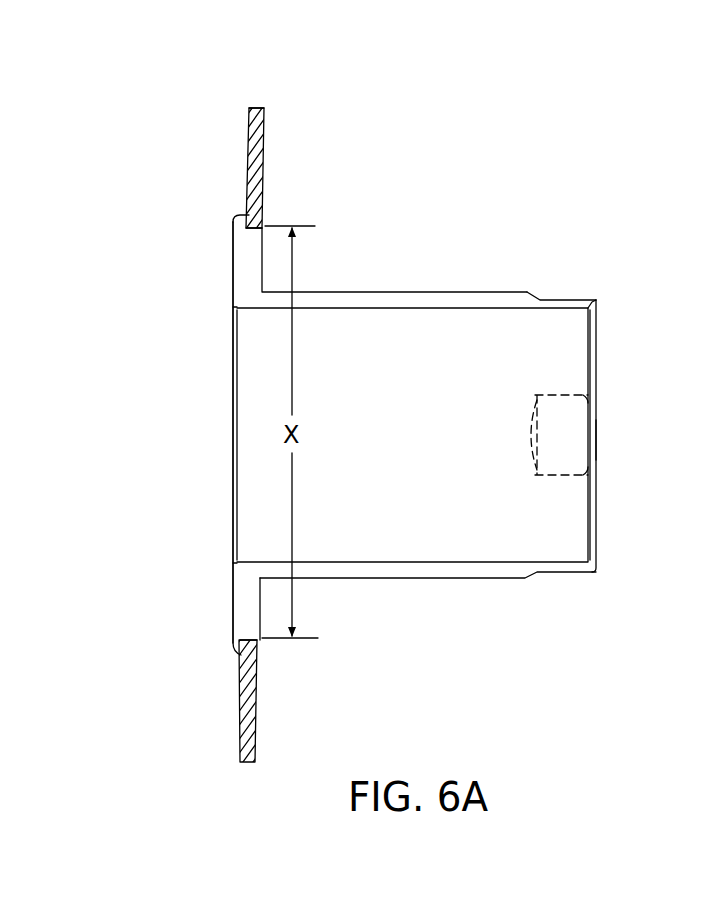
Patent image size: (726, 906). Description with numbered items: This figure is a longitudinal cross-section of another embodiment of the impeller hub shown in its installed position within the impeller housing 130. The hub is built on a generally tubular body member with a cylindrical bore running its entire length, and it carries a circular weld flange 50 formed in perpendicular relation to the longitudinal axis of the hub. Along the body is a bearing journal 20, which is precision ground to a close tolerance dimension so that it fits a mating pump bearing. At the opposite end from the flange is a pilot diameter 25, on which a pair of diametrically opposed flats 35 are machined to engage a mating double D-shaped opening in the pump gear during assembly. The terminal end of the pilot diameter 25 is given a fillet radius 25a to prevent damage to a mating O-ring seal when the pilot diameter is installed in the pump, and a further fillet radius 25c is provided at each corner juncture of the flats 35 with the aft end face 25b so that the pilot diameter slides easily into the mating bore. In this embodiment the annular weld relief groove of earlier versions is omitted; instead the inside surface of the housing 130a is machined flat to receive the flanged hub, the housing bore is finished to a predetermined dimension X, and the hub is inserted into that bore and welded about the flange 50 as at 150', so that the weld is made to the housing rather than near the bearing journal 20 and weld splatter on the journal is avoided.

The bearing journal 20 is at (413, 580).
The pilot diameter 25 is at (562, 575).
The fillet radius 25a is at (598, 300).
The aft end face 25b is at (600, 357).
The fillet radius 25c is at (598, 440).
The flats 35 is at (530, 418).
The circular weld flange 50 is at (233, 258).
The impeller housing 130 is at (270, 143).
The inside surface of the housing 130a is at (247, 210).
The weld 150' is at (200, 425).